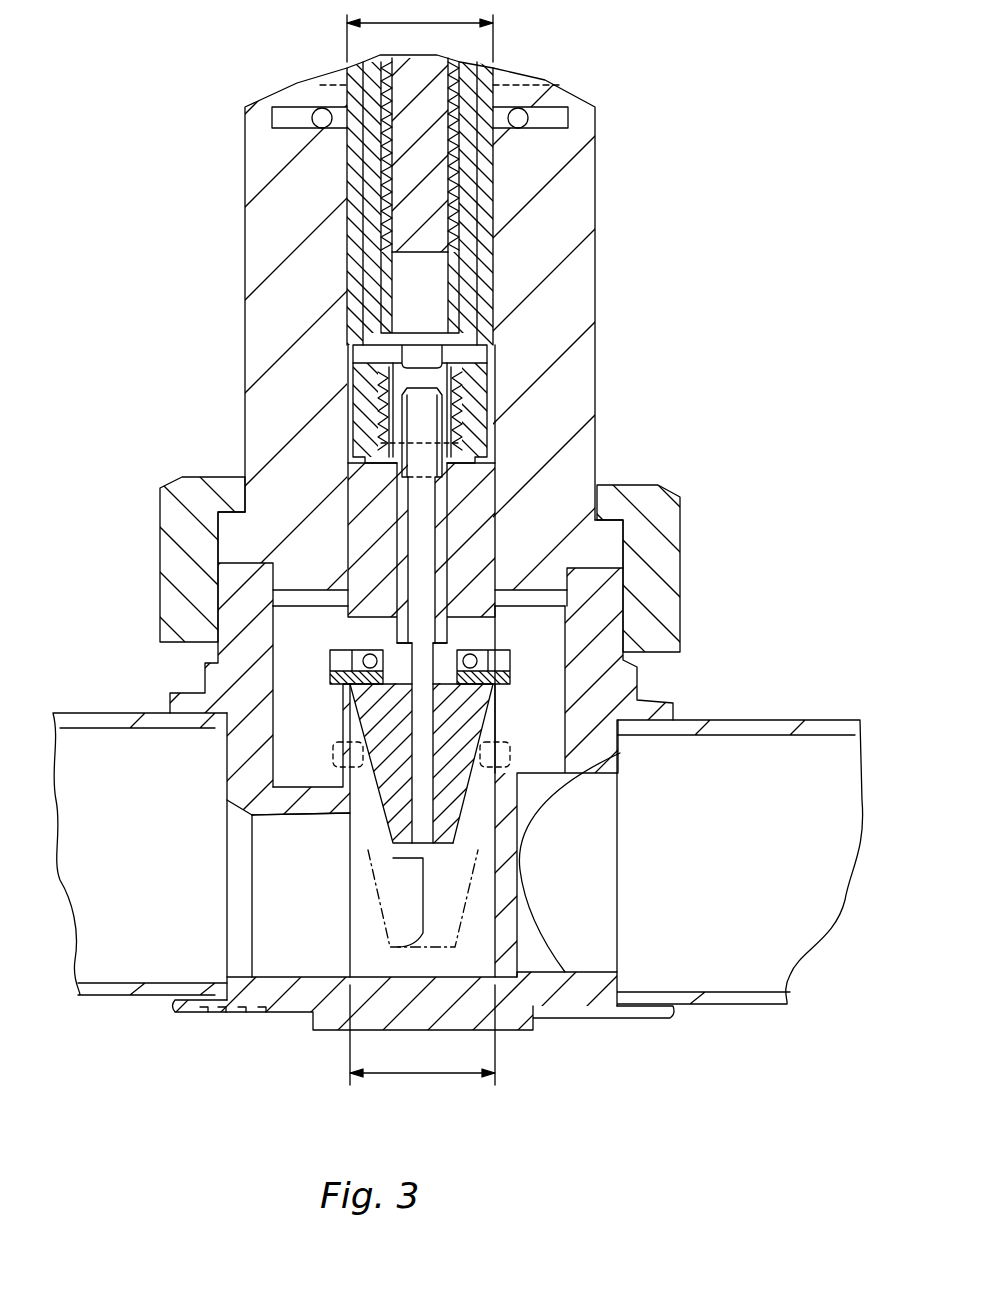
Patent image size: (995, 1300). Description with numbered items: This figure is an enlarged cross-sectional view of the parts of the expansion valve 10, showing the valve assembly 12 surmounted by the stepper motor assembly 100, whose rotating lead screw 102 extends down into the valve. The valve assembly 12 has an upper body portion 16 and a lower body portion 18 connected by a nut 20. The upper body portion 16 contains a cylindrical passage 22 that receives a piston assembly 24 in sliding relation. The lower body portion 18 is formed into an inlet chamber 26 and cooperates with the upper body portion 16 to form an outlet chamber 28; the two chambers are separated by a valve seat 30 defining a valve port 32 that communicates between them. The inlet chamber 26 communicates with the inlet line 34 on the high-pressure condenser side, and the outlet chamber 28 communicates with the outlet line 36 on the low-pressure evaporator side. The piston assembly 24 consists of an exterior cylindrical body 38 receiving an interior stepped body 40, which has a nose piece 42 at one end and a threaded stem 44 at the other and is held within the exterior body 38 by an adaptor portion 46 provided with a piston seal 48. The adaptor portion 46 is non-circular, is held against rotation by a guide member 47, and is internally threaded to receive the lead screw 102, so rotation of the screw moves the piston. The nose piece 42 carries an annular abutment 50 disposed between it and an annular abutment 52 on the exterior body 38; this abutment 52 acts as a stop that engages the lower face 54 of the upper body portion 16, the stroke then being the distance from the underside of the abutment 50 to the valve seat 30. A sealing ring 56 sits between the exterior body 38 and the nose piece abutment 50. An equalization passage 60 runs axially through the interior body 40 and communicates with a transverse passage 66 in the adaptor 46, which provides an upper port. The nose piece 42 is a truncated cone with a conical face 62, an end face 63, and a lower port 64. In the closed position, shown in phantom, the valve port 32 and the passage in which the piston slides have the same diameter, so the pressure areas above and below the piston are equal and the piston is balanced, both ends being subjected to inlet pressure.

The expansion valve 10 is at (497, 650).
The valve assembly 12 is at (503, 471).
The upper body portion 16 is at (597, 268).
The lower body portion 18 is at (625, 590).
The nut 20 is at (680, 520).
The cylindrical passage 22 is at (348, 160).
The piston assembly 24 is at (343, 538).
The inlet chamber 26 is at (297, 875).
The outlet chamber 28 is at (316, 716).
The valve seat 30 is at (340, 757).
The valve port 32 is at (360, 820).
The inlet line 34 is at (131, 878).
The outlet line 36 is at (759, 816).
The exterior cylindrical body 38 is at (343, 523).
The interior stepped body 40 is at (507, 760).
The nose piece 42 is at (480, 825).
The threaded stem 44 is at (390, 412).
The adaptor portion 46 is at (500, 322).
The guide member 47 is at (347, 203).
The piston seal 48 is at (488, 440).
The annular abutment 50 is at (517, 684).
The annular abutment 52 is at (512, 660).
The lower face 54 is at (535, 606).
The sealing ring 56 is at (478, 650).
The equalization passage 60 is at (435, 543).
The conical face 62 is at (345, 690).
The end face 63 is at (375, 905).
The lower port 64 is at (480, 878).
The transverse passage 66 is at (348, 358).
The stepper motor assembly 100 is at (450, 198).
The lead screw 102 is at (462, 172).